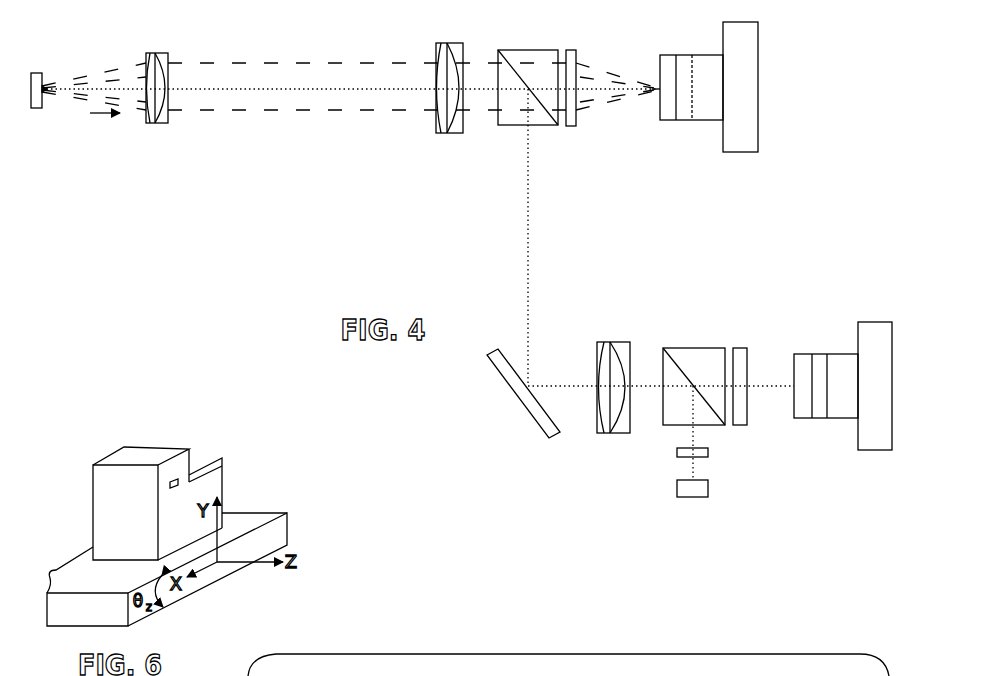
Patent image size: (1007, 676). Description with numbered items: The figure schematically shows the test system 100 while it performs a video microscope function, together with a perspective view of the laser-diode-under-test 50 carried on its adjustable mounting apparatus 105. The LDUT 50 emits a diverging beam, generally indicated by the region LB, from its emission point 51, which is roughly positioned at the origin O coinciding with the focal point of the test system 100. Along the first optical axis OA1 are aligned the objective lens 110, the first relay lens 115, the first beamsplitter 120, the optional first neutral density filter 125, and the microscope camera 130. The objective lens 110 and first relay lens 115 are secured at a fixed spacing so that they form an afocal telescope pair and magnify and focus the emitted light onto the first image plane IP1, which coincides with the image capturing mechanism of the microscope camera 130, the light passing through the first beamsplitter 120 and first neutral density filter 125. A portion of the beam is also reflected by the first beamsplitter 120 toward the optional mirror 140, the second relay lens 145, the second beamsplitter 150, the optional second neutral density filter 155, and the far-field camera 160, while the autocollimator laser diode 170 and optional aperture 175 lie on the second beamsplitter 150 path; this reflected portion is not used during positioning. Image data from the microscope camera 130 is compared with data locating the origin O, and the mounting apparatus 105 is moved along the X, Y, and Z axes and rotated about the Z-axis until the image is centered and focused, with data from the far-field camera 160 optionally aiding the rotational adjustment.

In FIG. 4, the laser-diode-under-test (LDUT) 50 is at (36, 73).
In FIG. 6, the laser-diode-under-test (LDUT) 50 is at (124, 453).
In FIG. 4, the emission point 51 is at (44, 88).
In FIG. 6, the emission point 51 is at (219, 465).
In FIG. 4, the origin O is at (44, 90).
In FIG. 4, the first (primary) optical axis OA1 is at (328, 96).
In FIG. 4, the region of the diverging beam LB is at (240, 65).
In FIG. 4, the first image plane IP1 is at (658, 80).
In FIG. 4, the test system 100 is at (402, 195).
In FIG. 6, the adjustable mounting apparatus 105 is at (262, 513).
In FIG. 4, the objective lens 110 is at (156, 53).
In FIG. 4, the first relay lens 115 is at (450, 43).
In FIG. 4, the first beamsplitter 120 is at (542, 49).
In FIG. 4, the first neutral density (ND) filter 125 is at (573, 48).
In FIG. 4, the microscope (first) camera 130 is at (687, 53).
In FIG. 4, the mirror 140 is at (498, 378).
In FIG. 4, the second relay lens 145 is at (622, 342).
In FIG. 4, the second beamsplitter 150 is at (700, 348).
In FIG. 4, the second neutral density (ND) filter 155 is at (738, 348).
In FIG. 4, the far-field (second) camera 160 is at (875, 322).
In FIG. 4, the autocollimator (second) light-emitting device (laser diode) 170 is at (710, 490).
In FIG. 4, the aperture 175 is at (710, 453).